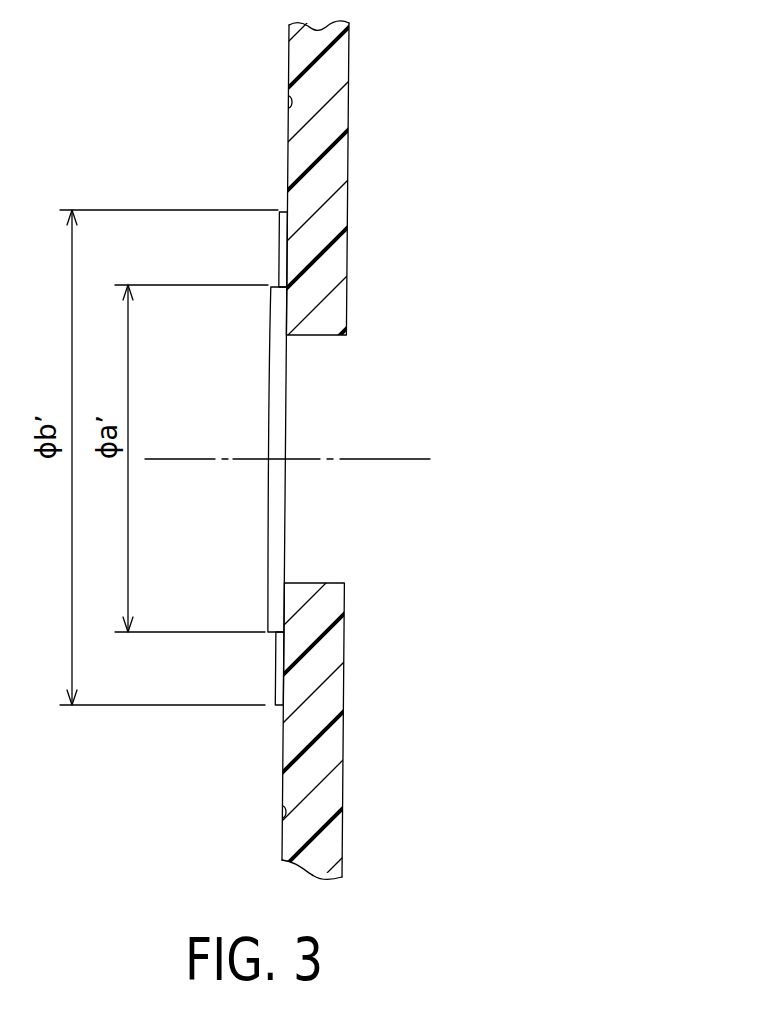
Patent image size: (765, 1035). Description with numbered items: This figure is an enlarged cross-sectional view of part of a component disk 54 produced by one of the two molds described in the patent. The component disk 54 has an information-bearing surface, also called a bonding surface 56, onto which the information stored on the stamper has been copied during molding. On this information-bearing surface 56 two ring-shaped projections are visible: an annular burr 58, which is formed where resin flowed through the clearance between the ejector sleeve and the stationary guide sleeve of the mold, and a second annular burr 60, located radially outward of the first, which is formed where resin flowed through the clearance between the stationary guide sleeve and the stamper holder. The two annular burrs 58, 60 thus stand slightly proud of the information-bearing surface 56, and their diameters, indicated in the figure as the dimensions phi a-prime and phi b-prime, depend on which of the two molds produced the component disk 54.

The component disk 54 is at (365, 87).
The information-bearing surface 56 is at (282, 780).
The annular burr 58 is at (277, 423).
The annular burr 60 is at (285, 228).